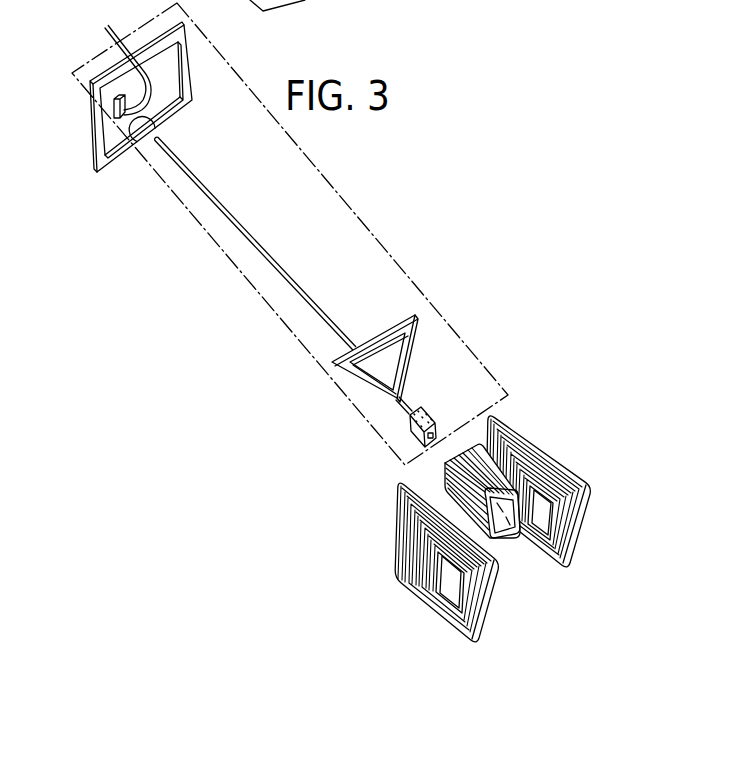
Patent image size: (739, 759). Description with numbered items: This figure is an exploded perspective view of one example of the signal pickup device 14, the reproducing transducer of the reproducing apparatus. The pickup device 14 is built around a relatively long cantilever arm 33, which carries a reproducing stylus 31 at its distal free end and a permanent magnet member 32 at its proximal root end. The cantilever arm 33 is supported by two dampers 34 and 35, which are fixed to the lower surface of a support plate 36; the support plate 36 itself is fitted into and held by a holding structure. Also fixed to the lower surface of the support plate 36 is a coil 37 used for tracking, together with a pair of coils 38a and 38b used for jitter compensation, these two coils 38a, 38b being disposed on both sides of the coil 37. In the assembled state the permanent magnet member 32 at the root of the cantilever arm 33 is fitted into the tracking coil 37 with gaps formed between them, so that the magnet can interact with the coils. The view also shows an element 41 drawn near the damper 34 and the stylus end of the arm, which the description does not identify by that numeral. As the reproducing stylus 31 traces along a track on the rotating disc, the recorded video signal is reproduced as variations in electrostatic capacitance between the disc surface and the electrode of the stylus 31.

The signal pickup device 14 is at (369, 185).
The reproducing stylus 31 is at (113, 106).
The permanent magnet member 32 is at (410, 450).
The cantilever arm 33 is at (263, 252).
The damper 34 is at (190, 84).
The damper 35 is at (392, 327).
The support plate 36 is at (403, 262).
The coil 37 is at (505, 538).
The coil 38a is at (413, 585).
The coil 38b is at (568, 472).
The pin 41 is at (110, 35).